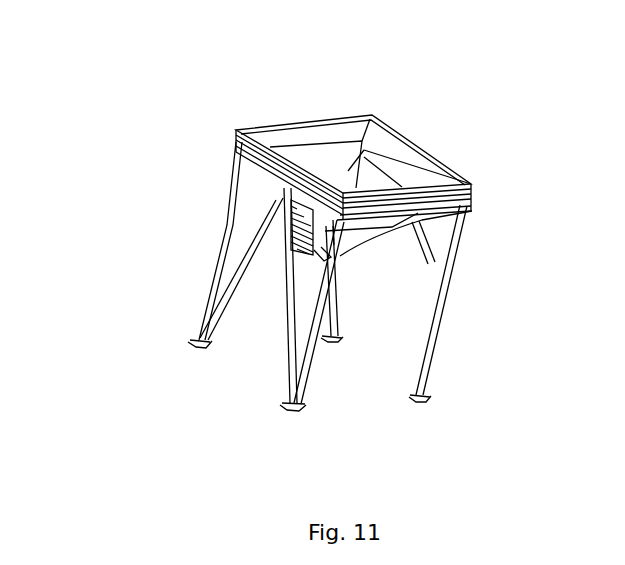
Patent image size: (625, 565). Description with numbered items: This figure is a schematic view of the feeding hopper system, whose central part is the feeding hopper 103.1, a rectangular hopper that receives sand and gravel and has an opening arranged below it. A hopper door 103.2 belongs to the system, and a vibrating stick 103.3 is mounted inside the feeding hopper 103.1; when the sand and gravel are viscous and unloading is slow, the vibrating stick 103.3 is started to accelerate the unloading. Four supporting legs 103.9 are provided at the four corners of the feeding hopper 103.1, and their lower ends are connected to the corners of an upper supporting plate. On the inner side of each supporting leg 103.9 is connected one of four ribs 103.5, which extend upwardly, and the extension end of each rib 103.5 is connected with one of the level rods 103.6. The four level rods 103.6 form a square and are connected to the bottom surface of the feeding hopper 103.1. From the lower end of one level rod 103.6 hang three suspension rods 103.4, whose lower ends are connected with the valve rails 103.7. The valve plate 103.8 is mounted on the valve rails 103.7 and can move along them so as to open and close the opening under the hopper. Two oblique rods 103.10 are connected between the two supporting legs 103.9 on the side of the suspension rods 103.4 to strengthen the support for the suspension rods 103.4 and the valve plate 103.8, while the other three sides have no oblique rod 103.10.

The feeding hopper 103.1 is at (345, 118).
The hopper door 103.2 is at (310, 135).
The vibrating stick 103.3 is at (393, 163).
The suspension rods 103.4 is at (273, 222).
The ribs 103.5 is at (422, 250).
The level rods 103.6 is at (381, 230).
The valve rails 103.7 is at (305, 260).
The valve plate 103.8 is at (321, 256).
The supporting legs 103.9 is at (213, 270).
The oblique rods 103.10 is at (288, 352).